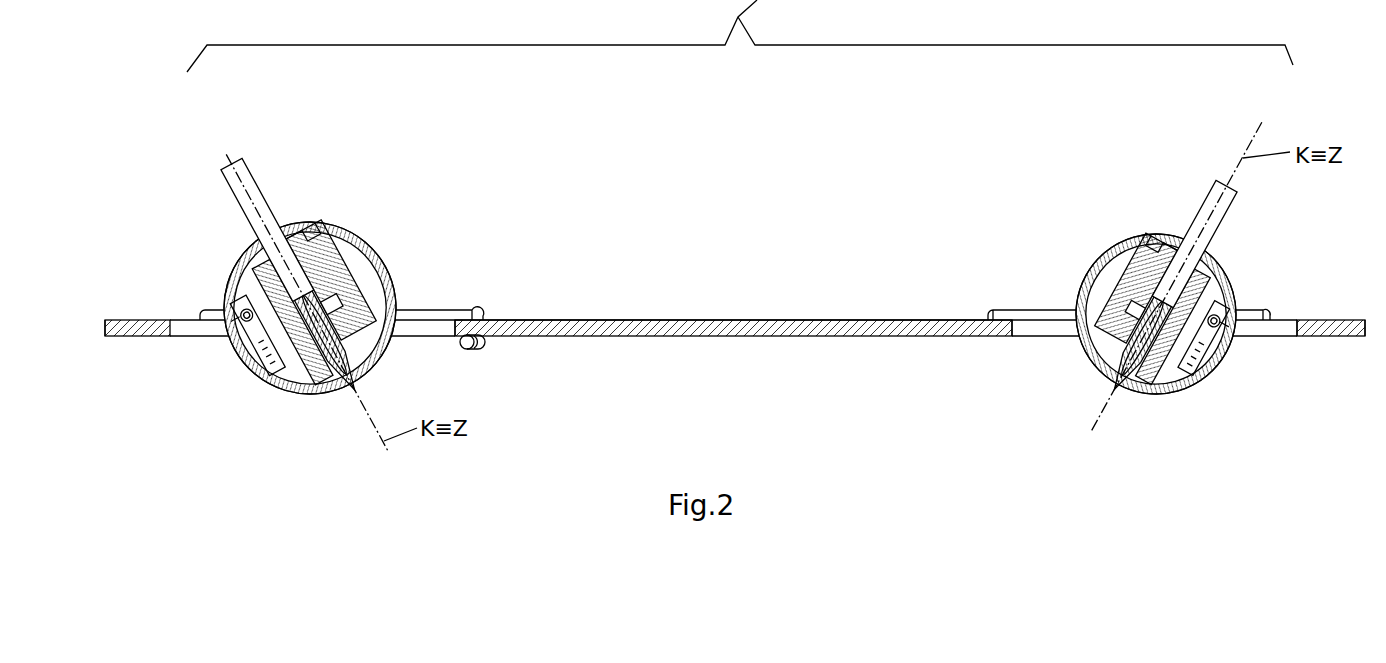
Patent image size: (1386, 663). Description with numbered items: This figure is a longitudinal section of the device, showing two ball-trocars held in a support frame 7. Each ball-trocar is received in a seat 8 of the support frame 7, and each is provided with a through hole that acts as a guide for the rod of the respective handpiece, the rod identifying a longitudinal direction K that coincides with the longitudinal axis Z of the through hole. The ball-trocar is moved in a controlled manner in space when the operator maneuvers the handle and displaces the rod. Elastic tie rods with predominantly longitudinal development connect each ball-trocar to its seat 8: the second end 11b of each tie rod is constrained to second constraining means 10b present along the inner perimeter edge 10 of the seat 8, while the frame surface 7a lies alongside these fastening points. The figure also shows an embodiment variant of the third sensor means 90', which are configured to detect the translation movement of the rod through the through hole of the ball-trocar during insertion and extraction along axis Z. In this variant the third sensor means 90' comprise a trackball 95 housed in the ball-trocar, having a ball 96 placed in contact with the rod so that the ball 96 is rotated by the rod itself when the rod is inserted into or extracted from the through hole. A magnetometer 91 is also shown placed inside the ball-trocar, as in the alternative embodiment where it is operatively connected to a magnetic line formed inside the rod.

The support frame 7 is at (597, 331).
The plate upper surface 7a is at (698, 320).
The seat 8 is at (433, 331).
The inner perimeter edge 10 is at (490, 326).
The second constraining means 10b is at (472, 348).
The second end 11b is at (463, 316).
The third sensor means 90' is at (377, 271).
The magnetometer 91 is at (262, 343).
The trackball 95 is at (341, 283).
The ball 96 is at (332, 306).